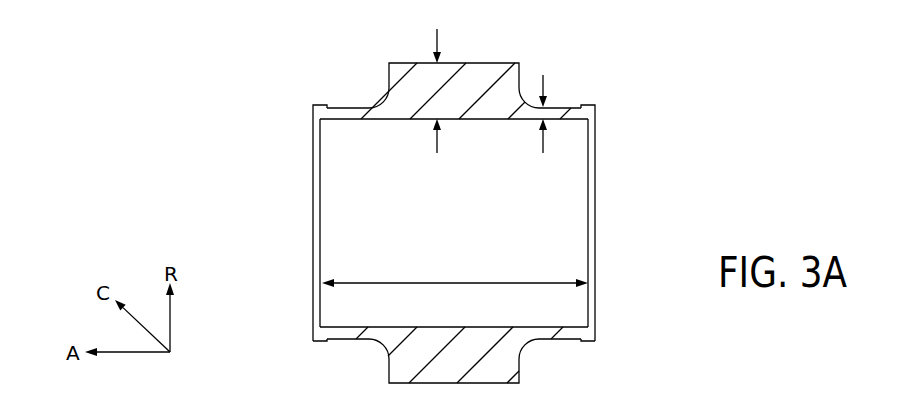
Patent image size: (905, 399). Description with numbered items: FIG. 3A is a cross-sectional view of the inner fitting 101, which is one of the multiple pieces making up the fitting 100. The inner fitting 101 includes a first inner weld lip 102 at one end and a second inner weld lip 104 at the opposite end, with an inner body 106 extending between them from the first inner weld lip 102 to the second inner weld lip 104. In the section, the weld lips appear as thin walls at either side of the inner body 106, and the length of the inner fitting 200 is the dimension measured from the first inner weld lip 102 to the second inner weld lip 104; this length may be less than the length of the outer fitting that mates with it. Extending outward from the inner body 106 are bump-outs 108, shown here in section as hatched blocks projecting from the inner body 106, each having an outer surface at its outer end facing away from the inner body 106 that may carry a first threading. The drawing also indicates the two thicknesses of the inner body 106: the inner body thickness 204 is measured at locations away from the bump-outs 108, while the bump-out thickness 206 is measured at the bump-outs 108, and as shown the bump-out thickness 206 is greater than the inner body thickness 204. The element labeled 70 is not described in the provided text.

The gas turbine engine 70 is at (100, 188).
The fitting 100 is at (93, 122).
The inner fitting 101 is at (232, 135).
The first inner weld lip 102 is at (313, 227).
The second inner weld lip 104 is at (595, 214).
The inner body 106 is at (352, 116).
The bump-outs 108 is at (487, 64).
The length of the inner fitting 200 is at (408, 283).
The inner body thickness 204 is at (544, 90).
The bump-out thickness 206 is at (437, 44).